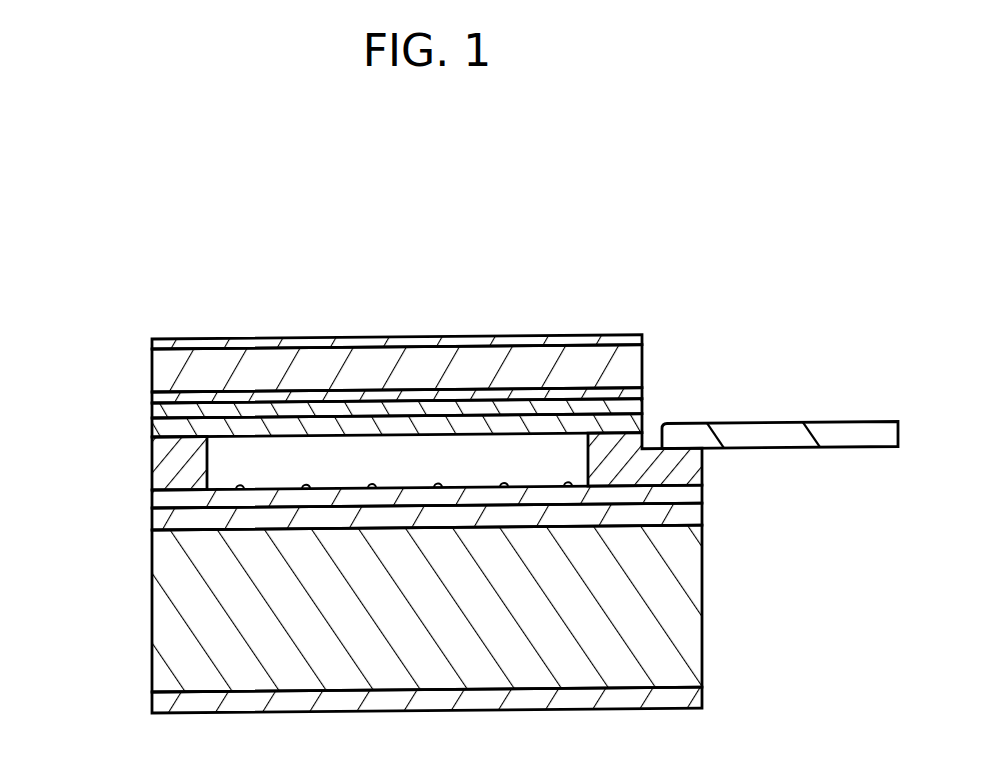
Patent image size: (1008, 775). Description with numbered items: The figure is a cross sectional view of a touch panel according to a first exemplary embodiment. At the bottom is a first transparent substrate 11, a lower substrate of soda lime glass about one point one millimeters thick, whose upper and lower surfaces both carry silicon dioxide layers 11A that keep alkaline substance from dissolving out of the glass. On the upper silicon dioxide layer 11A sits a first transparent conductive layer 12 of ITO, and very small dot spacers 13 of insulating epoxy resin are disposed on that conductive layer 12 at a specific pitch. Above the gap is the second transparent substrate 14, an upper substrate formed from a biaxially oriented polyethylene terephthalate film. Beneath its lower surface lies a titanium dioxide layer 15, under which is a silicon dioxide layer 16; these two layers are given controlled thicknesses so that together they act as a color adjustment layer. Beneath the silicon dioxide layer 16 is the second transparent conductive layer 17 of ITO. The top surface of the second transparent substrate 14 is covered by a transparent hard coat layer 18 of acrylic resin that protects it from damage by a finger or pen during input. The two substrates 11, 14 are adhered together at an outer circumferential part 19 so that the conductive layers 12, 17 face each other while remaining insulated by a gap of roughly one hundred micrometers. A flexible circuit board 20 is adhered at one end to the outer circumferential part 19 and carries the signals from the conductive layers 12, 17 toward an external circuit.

The first transparent substrate 11 is at (190, 602).
The silicon dioxide layers 11A is at (203, 523).
The first transparent conductive layer 12 is at (193, 500).
The dot spacers 13 is at (565, 488).
The second transparent substrate 14 is at (332, 344).
The titanium dioxide layer 15 is at (365, 397).
The silicon dioxide layer 16 is at (437, 406).
The second transparent conductive layer 17 is at (512, 428).
The transparent hard coat layer 18 is at (212, 344).
The outer circumferential part 19 is at (167, 463).
The flexible circuit board 20 is at (832, 444).